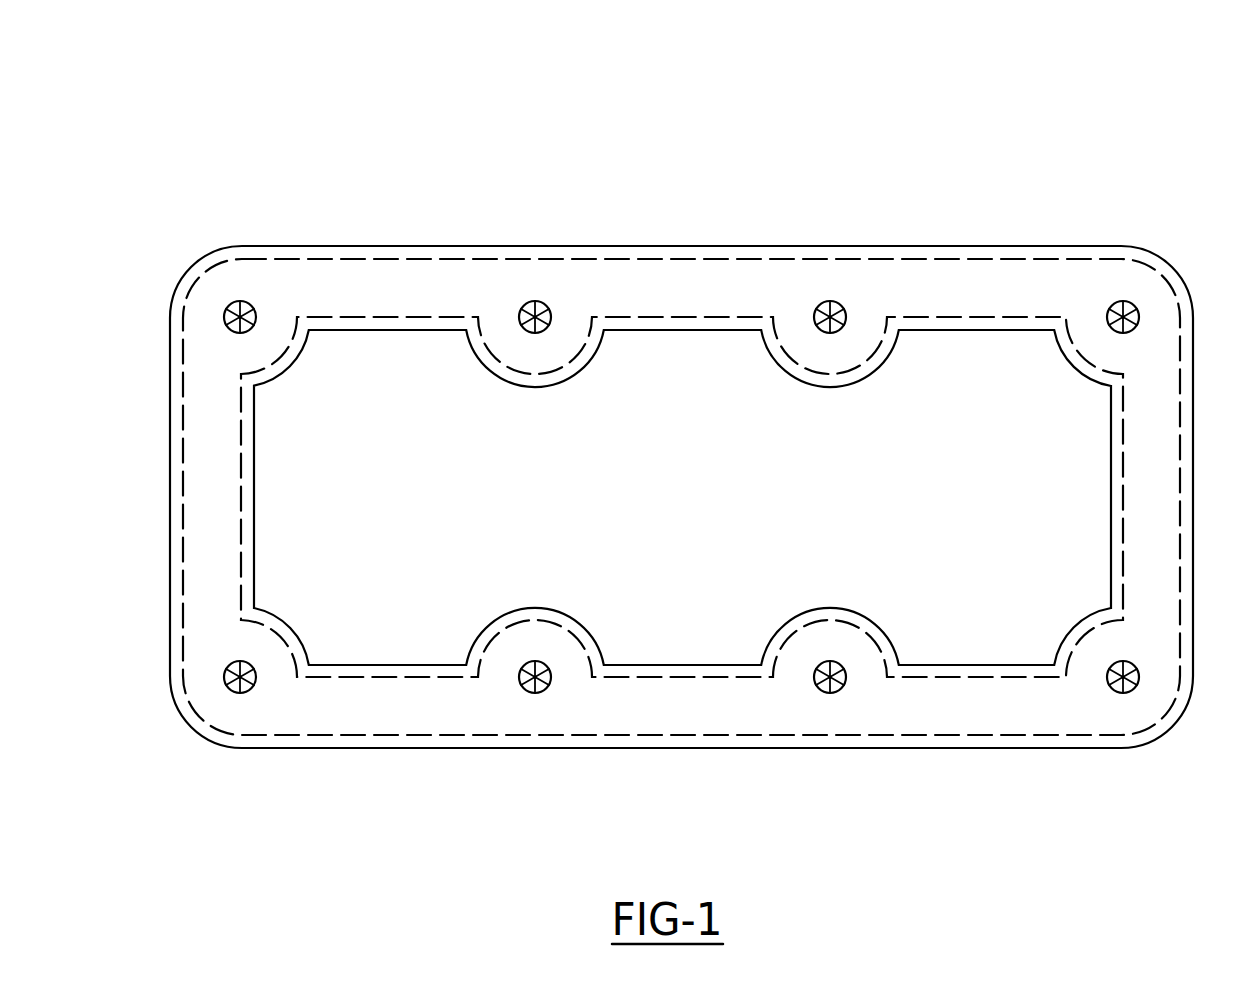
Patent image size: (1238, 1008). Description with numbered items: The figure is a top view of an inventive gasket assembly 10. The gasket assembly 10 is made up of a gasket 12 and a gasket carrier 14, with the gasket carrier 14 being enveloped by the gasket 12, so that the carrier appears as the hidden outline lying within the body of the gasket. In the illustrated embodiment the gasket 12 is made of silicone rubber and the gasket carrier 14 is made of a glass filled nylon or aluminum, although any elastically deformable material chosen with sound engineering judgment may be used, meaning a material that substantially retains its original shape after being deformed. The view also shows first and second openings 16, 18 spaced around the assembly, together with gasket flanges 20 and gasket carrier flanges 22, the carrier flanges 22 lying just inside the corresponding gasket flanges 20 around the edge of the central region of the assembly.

The gasket assembly 10 is at (800, 152).
The gasket 12 is at (985, 748).
The gasket carrier 14 is at (995, 262).
The first opening 16 is at (233, 305).
The second opening 18 is at (247, 302).
The gasket flange 20 is at (303, 350).
The gasket carrier flange 22 is at (277, 362).